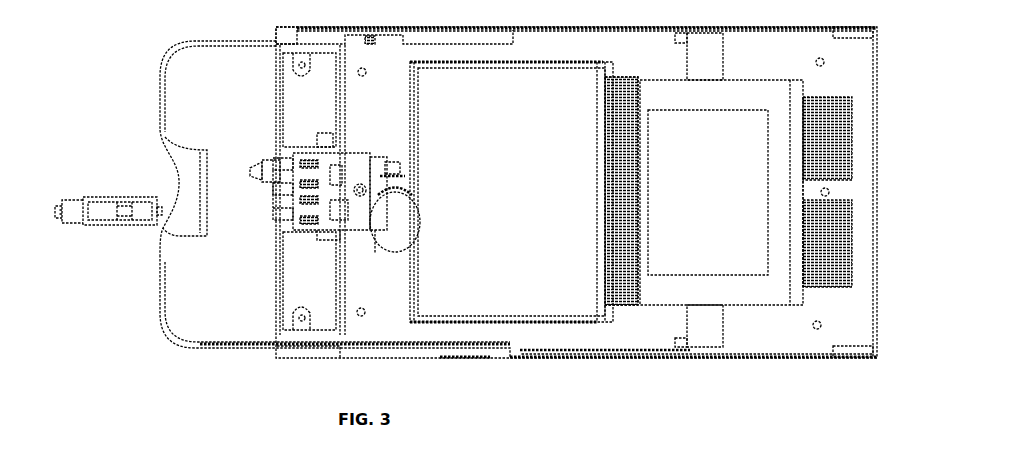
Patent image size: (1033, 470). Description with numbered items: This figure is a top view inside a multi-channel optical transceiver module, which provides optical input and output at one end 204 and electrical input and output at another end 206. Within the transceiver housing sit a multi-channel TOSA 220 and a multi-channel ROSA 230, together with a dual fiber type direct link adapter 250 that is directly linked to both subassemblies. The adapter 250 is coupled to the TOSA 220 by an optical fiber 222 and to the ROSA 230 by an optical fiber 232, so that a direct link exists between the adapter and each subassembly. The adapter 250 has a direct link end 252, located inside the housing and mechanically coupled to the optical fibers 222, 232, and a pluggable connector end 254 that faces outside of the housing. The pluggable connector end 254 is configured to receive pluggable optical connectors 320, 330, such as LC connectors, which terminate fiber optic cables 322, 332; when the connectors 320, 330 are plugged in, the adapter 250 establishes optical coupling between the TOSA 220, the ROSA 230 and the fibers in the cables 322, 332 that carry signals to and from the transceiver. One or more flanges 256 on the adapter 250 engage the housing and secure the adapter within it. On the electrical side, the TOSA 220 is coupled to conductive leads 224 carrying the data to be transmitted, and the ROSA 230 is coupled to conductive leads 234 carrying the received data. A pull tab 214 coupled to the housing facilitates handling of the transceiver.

The one end 204 is at (277, 199).
The another end 206 is at (880, 92).
The pull tab 214 is at (159, 318).
The multi-channel TOSA 220 is at (553, 318).
The optical fiber 222 is at (421, 232).
The conductive leads 224 is at (626, 80).
The multi-channel ROSA 230 is at (672, 302).
The optical fiber 232 is at (399, 176).
The conductive leads 234 is at (829, 100).
The dual fiber type direct link adapter 250 is at (312, 238).
The direct link end 252 is at (376, 164).
The pluggable connector end 254 is at (272, 206).
The flange 256 is at (325, 145).
The pluggable optical connector 320 is at (126, 220).
The fiber optic cable 322 is at (62, 209).
The pluggable optical connector 330 is at (268, 170).
The fiber optic cable 332 is at (249, 173).